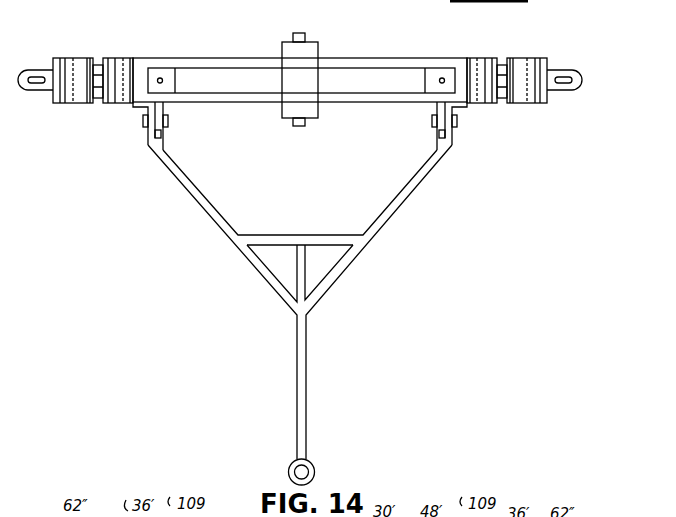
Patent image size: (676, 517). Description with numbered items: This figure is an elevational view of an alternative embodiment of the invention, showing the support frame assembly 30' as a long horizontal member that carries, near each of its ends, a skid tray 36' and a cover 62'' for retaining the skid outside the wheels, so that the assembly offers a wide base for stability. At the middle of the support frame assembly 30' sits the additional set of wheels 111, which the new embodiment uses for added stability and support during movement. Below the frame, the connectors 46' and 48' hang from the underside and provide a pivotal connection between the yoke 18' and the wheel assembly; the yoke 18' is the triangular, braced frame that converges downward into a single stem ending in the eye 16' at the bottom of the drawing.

The support frame assembly 30' is at (300, 101).
The additional set of wheels 111 is at (310, 42).
The cover 62'' is at (300, 64).
The skid tray 36' is at (300, 64).
The connector 46' is at (297, 126).
The connector 48' is at (300, 141).
The yoke 18' is at (300, 302).
The eye ring 16' is at (323, 462).